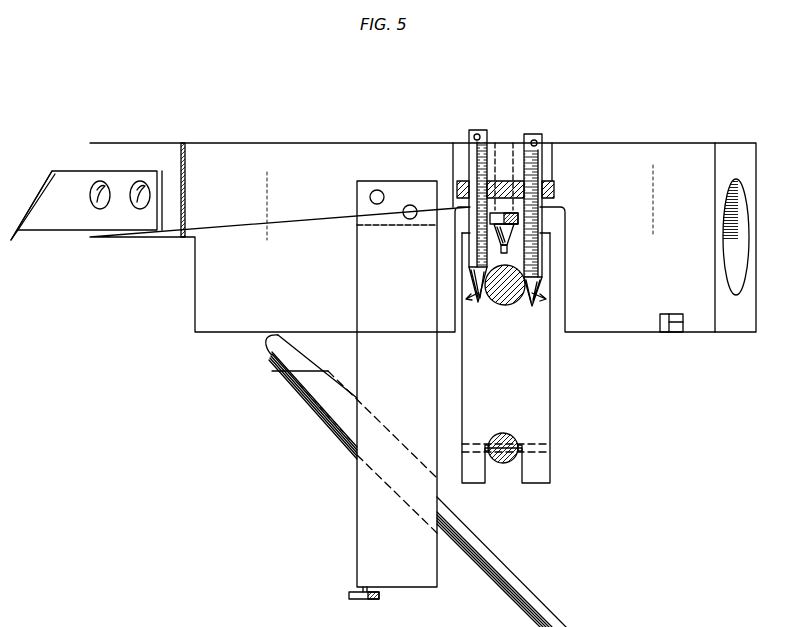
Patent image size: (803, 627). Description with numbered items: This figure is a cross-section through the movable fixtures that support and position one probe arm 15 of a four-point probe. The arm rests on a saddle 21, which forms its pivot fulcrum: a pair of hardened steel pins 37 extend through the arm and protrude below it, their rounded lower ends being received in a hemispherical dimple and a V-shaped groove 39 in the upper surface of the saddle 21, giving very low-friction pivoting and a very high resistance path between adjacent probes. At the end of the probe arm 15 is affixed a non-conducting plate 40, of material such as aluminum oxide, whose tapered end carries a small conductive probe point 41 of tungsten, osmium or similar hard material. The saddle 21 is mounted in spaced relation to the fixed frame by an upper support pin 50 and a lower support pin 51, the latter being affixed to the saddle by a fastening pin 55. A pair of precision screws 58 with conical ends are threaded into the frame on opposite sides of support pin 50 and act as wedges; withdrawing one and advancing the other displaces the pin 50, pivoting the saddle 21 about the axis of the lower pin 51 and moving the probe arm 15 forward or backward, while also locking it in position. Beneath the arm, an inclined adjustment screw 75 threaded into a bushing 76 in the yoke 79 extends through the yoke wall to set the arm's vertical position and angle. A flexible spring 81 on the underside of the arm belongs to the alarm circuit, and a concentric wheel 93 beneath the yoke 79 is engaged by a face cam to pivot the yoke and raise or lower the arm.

The probe arm 15 is at (290, 152).
The saddle 21 is at (550, 376).
The hardened steel pins 37 is at (512, 228).
The V-shaped groove 39 is at (516, 238).
The non-conducting plate 40 is at (63, 222).
The conductive probe point 41 is at (36, 184).
The support pin 50 is at (505, 306).
The support pin 51 is at (503, 464).
The fastening pin 55 is at (530, 442).
The precision screws 58 is at (536, 133).
The inclined adjustment screw 75 is at (497, 572).
The bushing 76 is at (298, 400).
The yoke 79 is at (370, 282).
The flexible spring 81 is at (676, 333).
The wheel 93 is at (380, 597).